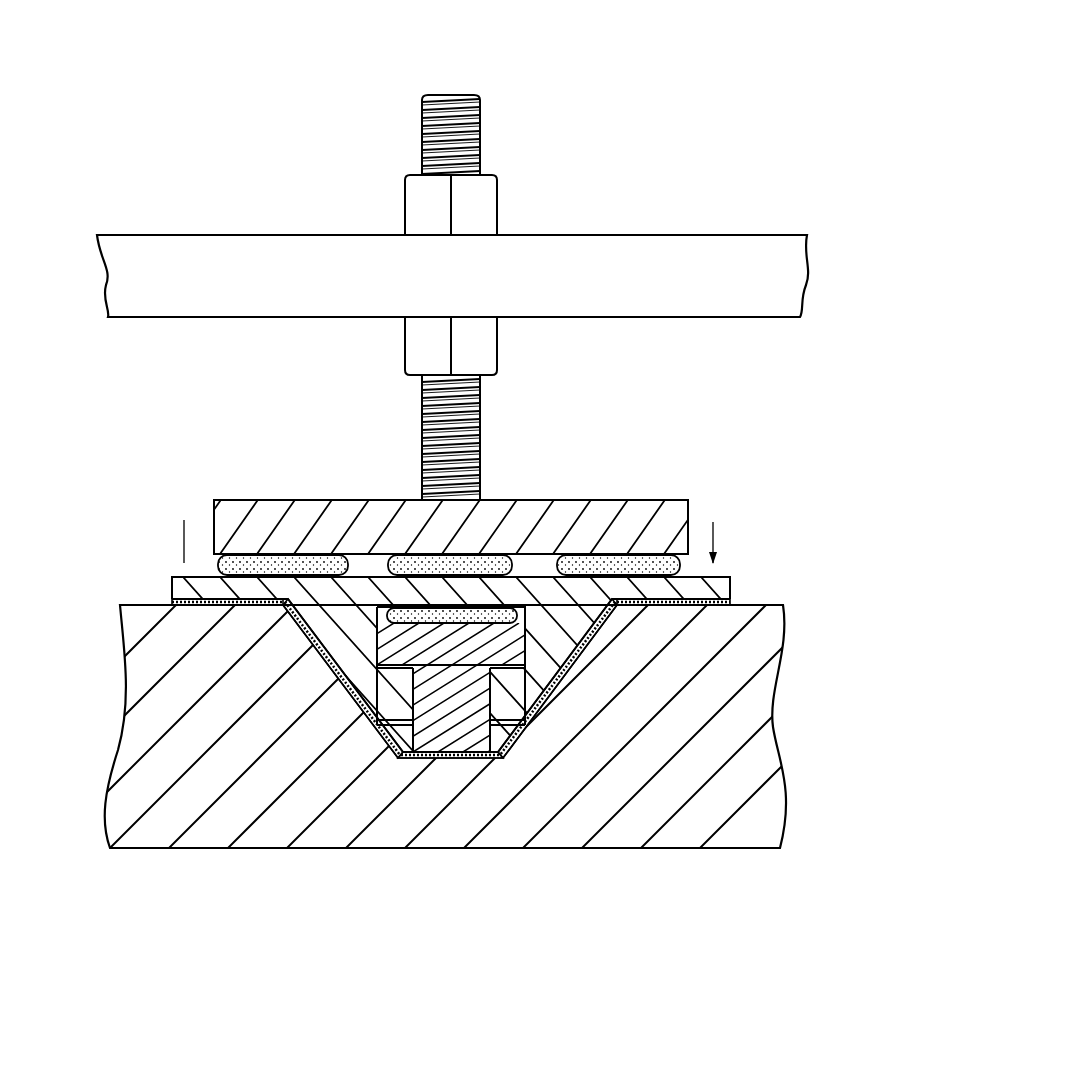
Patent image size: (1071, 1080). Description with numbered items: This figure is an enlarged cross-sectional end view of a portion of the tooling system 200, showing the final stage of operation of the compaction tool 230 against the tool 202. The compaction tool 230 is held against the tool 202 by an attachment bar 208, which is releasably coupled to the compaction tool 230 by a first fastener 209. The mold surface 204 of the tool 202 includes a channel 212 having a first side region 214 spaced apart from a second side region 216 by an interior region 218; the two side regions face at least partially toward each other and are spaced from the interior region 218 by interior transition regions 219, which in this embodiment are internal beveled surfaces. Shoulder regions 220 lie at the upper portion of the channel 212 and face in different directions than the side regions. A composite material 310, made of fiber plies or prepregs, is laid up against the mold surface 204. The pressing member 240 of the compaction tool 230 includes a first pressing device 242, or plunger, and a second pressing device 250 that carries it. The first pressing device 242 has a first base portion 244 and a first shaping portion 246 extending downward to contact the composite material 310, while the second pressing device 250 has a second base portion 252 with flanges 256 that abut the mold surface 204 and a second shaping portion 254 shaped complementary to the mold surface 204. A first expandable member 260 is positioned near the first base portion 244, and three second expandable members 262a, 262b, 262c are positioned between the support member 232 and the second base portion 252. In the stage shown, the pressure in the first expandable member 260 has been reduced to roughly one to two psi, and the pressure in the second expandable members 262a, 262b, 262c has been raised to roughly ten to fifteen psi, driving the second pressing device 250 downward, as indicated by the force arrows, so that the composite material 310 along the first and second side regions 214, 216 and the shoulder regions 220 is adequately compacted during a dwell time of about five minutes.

The tooling system 200 is at (792, 150).
The tool 202 is at (738, 723).
The mold surface 204 is at (146, 604).
The attachment bar 208 is at (792, 272).
The first fastener 209 is at (482, 428).
The channel 212 is at (483, 793).
The first side region 214 is at (312, 685).
The second side region 216 is at (490, 690).
The interior region 218 is at (431, 757).
The interior transition region 219 is at (395, 765).
The shoulder region 220 is at (271, 610).
The compaction tool 230 is at (474, 490).
The support member 232 is at (656, 517).
The pressing member 240 is at (738, 566).
The first pressing device 242 is at (505, 715).
The first base portion 244 is at (580, 634).
The first shaping portion 246 is at (450, 737).
The second pressing device 250 is at (572, 604).
The second base portion 252 is at (513, 605).
The second shaping portion 254 is at (340, 685).
The flange 256 is at (172, 598).
The first expandable member 260 is at (445, 605).
The second expandable member 262a is at (283, 573).
The second expandable member 262b is at (402, 565).
The second expandable member 262c is at (615, 557).
The composite material 310 is at (275, 680).